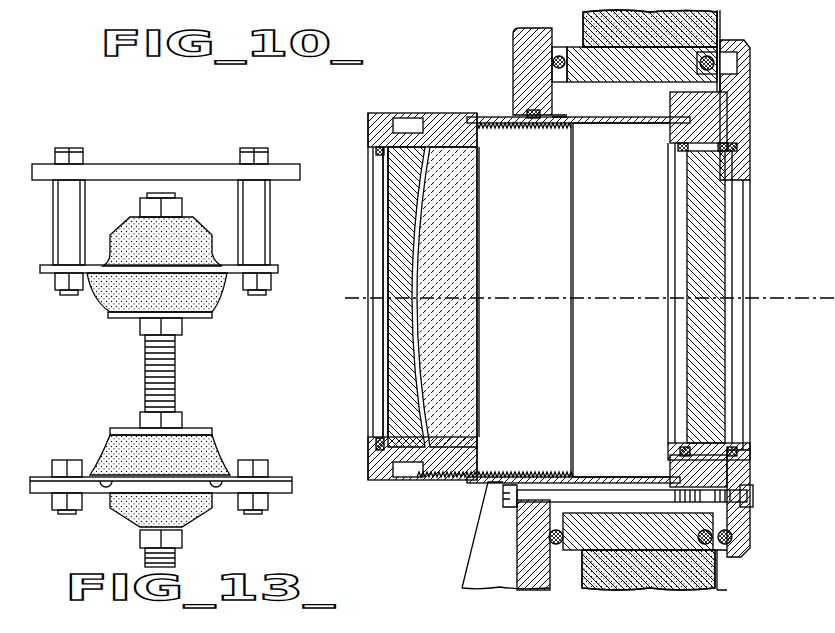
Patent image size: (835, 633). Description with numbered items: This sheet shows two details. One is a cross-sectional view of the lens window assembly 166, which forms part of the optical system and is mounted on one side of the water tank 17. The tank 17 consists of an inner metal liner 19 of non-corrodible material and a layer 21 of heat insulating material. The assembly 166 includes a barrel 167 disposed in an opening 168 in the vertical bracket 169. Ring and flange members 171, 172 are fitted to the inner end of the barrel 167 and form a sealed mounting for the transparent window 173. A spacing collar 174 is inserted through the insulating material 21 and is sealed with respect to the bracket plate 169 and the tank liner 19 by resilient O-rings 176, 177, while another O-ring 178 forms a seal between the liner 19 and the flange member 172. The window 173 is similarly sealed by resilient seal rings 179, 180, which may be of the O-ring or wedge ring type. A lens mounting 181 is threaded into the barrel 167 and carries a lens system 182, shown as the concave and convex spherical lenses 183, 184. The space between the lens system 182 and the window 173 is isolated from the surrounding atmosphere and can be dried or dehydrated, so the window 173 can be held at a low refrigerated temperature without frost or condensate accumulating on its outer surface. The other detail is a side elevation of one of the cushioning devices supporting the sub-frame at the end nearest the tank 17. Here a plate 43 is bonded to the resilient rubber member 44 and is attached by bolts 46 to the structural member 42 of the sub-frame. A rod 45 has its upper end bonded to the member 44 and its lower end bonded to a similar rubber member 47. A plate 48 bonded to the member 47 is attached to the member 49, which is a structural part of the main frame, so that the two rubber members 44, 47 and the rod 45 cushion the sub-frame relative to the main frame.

In FIG. 10, the structural member 42 is at (133, 165).
In FIG. 10, the plate 43 is at (278, 273).
In FIG. 10, the resilient rubber member 44 is at (196, 236).
In FIG. 10, the rod 45 is at (177, 367).
In FIG. 10, the bolts 46 is at (75, 151).
In FIG. 10, the rubber member 47 is at (218, 441).
In FIG. 10, the plate 48 is at (45, 476).
In FIG. 10, the member 49 is at (278, 494).
In FIG. 13, the water tank 17 is at (621, 582).
In FIG. 13, the inner metal liner 19 is at (718, 573).
In FIG. 13, the layer of heat insulating material 21 is at (689, 578).
In FIG. 13, the lens window assembly 166 is at (760, 392).
In FIG. 13, the barrel 167 is at (648, 109).
In FIG. 13, the opening 168 is at (551, 115).
In FIG. 13, the vertical bracket 169 is at (530, 584).
In FIG. 13, the ring member 171 is at (678, 135).
In FIG. 13, the flange member 172 is at (742, 103).
In FIG. 13, the transparent window 173 is at (708, 248).
In FIG. 13, the spacing collar 174 is at (610, 72).
In FIG. 13, the O-ring 176 is at (552, 62).
In FIG. 13, the O-ring 177 is at (713, 26).
In FIG. 13, the O-ring 178 is at (747, 58).
In FIG. 13, the resilient seal ring 179 is at (676, 146).
In FIG. 13, the resilient seal ring 180 is at (735, 147).
In FIG. 13, the lens mounting 181 is at (369, 469).
In FIG. 13, the lens system 182 is at (385, 347).
In FIG. 13, the concave spherical lens 183 is at (395, 315).
In FIG. 13, the convex spherical lens 184 is at (465, 315).